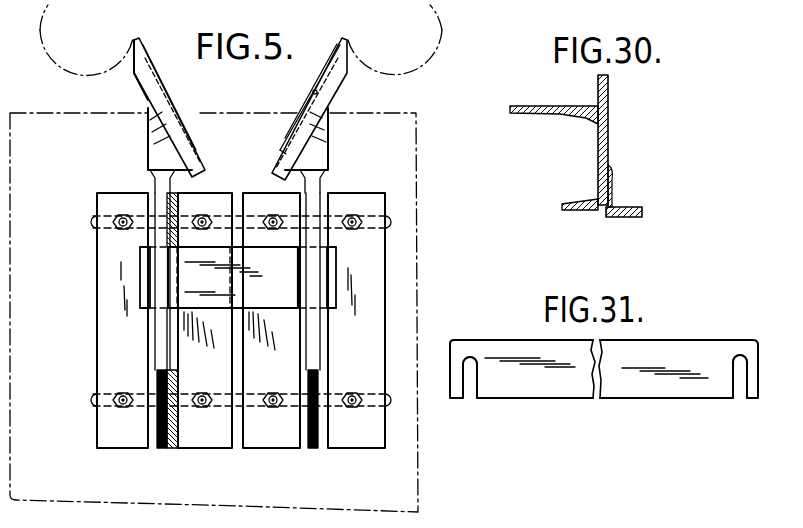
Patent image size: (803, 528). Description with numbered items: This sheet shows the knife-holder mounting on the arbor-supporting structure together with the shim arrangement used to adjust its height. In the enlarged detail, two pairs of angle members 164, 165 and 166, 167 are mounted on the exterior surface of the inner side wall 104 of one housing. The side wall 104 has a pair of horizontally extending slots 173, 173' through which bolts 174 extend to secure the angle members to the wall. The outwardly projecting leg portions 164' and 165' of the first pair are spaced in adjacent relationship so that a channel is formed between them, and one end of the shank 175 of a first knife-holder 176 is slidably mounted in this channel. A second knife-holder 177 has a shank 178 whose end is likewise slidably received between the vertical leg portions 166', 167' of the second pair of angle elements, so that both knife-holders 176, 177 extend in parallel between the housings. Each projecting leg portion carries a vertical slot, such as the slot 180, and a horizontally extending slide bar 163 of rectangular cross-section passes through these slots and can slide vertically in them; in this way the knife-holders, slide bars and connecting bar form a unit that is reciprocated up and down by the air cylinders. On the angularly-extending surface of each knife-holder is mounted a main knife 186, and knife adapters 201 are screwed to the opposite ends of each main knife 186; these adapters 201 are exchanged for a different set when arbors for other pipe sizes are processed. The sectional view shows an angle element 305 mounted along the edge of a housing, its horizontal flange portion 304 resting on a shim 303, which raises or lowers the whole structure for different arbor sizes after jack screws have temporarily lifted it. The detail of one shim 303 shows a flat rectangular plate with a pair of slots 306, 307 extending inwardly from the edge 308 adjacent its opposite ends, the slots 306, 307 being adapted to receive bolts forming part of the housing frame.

In FIG. 5, the inner side wall 104 is at (418, 336).
In FIG. 5, the slide bar 163 is at (142, 282).
In FIG. 5, the angle member 164 is at (128, 342).
In FIG. 5, the outwardly projecting leg portion 164' is at (102, 326).
In FIG. 5, the angle member 165 is at (213, 342).
In FIG. 5, the outwardly projecting leg portion 165' is at (198, 402).
In FIG. 5, the angle member 166 is at (277, 342).
In FIG. 5, the vertical leg portion 166' is at (278, 342).
In FIG. 5, the angle member 167 is at (356, 342).
In FIG. 5, the vertical leg portion 167' is at (351, 328).
In FIG. 5, the horizontally extending slot 173 is at (278, 215).
In FIG. 5, the horizontally extending slot 173' is at (278, 422).
In FIG. 5, the bolt 174 is at (118, 405).
In FIG. 5, the shank 175 is at (162, 242).
In FIG. 5, the knife-holder 176 is at (146, 157).
In FIG. 5, the knife-holder 177 is at (331, 152).
In FIG. 5, the shank 178 is at (313, 236).
In FIG. 5, the vertical slot 180 is at (178, 348).
In FIG. 5, the main knife 186 is at (336, 94).
In FIG. 5, the knife adapter 201 is at (298, 101).
In FIG. 30, the shim 303 is at (633, 218).
In FIG. 31, the shim 303 is at (662, 390).
In FIG. 30, the horizontal flange portion 304 is at (639, 207).
In FIG. 30, the angle element 305 is at (614, 186).
In FIG. 31, the slot 306 is at (478, 378).
In FIG. 31, the slot 307 is at (733, 378).
In FIG. 31, the edge 308 is at (556, 400).